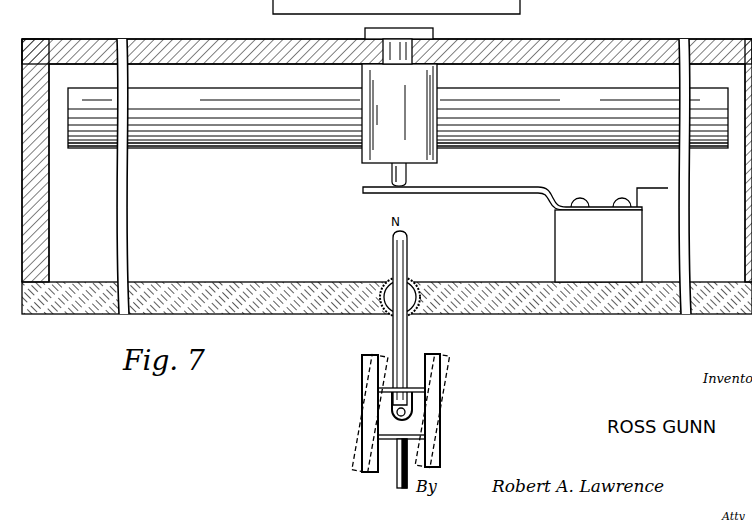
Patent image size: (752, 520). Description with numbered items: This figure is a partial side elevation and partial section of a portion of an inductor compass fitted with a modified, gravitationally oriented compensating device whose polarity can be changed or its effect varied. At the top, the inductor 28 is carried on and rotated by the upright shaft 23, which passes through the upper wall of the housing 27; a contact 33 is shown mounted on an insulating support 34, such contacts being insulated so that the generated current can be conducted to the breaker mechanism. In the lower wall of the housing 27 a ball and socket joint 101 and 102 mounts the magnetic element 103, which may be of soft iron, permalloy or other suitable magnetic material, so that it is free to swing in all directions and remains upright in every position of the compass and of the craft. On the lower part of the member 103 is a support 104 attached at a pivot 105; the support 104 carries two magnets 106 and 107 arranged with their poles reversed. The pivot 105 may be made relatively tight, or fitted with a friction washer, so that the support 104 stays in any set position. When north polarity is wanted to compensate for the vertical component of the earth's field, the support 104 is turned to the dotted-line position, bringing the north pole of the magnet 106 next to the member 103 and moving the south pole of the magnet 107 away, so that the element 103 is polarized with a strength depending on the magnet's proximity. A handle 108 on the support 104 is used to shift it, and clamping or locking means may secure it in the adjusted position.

The upright shaft 23 is at (400, 54).
The housing 27 is at (717, 313).
The inductor 28 is at (272, 145).
The contact 33 is at (478, 194).
The insulating support 34 is at (560, 246).
The ball of ball and socket joint 101 is at (378, 313).
The socket of ball and socket joint 102 is at (372, 293).
The magnetic element 103 is at (410, 335).
The support 104 is at (418, 418).
The pivot 105 is at (405, 406).
The magnet 106 is at (432, 435).
The magnet 107 is at (362, 427).
The handle 108 is at (397, 483).